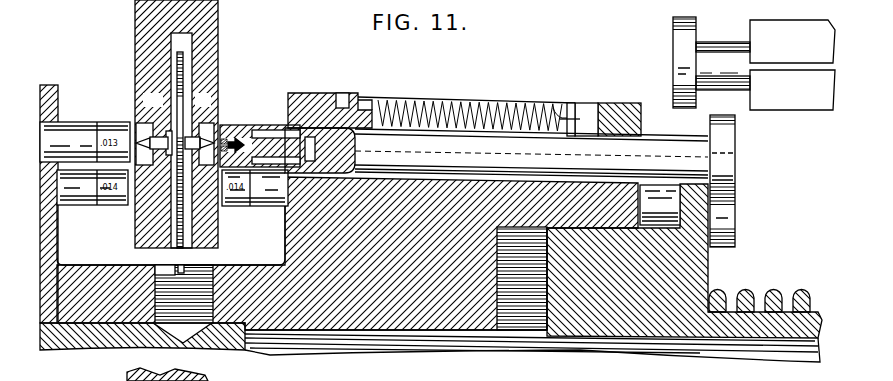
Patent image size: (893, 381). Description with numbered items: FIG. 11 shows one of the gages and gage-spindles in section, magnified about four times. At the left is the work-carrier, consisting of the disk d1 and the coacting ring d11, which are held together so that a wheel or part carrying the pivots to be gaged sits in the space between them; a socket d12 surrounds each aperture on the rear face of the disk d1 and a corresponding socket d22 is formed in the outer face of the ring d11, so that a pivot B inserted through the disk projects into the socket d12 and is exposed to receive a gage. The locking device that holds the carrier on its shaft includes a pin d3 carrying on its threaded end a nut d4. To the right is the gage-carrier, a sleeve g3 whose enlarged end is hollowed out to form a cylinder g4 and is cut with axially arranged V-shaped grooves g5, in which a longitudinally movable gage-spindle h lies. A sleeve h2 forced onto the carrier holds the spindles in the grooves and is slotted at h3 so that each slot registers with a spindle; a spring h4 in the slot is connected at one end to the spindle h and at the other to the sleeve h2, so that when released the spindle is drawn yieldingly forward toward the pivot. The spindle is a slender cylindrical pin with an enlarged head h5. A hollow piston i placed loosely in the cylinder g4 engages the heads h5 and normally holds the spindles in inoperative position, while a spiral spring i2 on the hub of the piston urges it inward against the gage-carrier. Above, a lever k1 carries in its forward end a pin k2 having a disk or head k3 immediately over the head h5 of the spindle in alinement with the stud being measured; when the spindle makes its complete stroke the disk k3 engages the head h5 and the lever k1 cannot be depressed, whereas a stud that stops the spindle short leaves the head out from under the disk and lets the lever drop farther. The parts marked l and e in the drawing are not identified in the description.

The disk d1 is at (135, 42).
The ring d11 is at (218, 30).
The socket d12 is at (137, 128).
The socket d22 is at (214, 128).
The pin d3 is at (151, 206).
The nut d4 is at (205, 206).
The vertical threaded rod l is at (182, 92).
The pivots B is at (159, 123).
The horizontal pin e is at (194, 122).
The V-shaped grooves g5 is at (292, 222).
The cylinders g4 is at (520, 322).
The sleeve g3 is at (358, 345).
The gage-spindles h is at (531, 153).
The sleeve h2 is at (611, 104).
The slots h3 is at (588, 108).
The spring h4 is at (506, 106).
The enlarged head h5 is at (735, 148).
The hollow piston i is at (602, 328).
The spiral spring i2 is at (802, 291).
The levers k1 is at (792, 65).
The pin k2 is at (716, 50).
The disk or head k3 is at (676, 34).